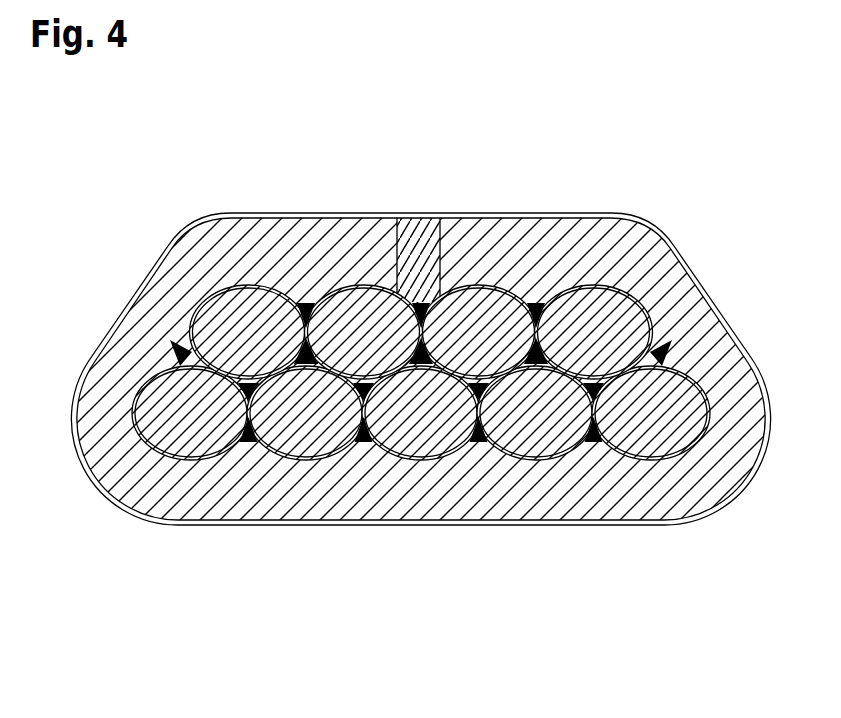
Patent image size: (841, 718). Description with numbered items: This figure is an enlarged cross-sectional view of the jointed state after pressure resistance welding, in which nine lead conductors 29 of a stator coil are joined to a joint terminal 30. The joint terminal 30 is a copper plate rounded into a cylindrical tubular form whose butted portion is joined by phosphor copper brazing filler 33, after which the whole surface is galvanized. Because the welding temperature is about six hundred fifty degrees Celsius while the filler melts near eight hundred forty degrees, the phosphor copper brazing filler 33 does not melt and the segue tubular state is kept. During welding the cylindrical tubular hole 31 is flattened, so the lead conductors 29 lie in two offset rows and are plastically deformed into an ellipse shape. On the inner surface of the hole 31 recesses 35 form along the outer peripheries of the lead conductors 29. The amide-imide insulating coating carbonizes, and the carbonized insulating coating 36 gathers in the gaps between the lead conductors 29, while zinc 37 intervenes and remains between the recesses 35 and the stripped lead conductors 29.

The lead conductor 29 is at (356, 318).
The joint terminal 30 is at (656, 268).
The cylindrical tubular hole 31 is at (234, 428).
The phosphor copper brazing filler 33 is at (425, 216).
The recess 35 is at (300, 443).
The carbonized insulating coating 36 is at (540, 300).
The zinc 37 is at (550, 457).